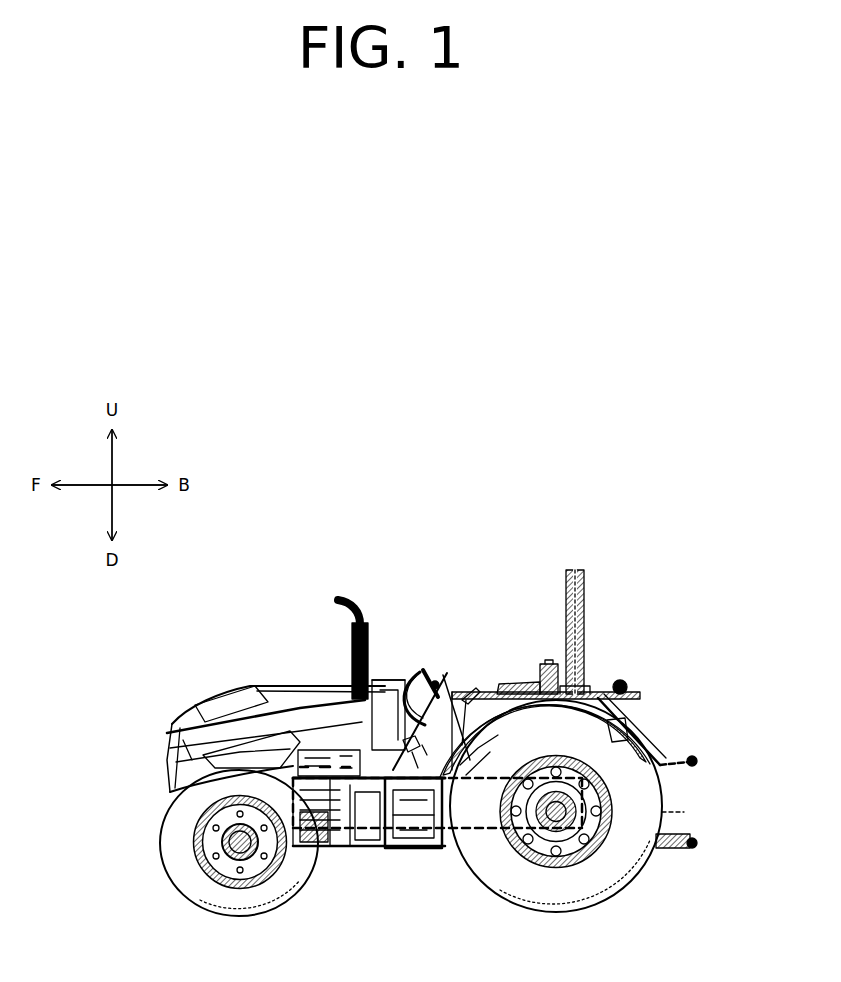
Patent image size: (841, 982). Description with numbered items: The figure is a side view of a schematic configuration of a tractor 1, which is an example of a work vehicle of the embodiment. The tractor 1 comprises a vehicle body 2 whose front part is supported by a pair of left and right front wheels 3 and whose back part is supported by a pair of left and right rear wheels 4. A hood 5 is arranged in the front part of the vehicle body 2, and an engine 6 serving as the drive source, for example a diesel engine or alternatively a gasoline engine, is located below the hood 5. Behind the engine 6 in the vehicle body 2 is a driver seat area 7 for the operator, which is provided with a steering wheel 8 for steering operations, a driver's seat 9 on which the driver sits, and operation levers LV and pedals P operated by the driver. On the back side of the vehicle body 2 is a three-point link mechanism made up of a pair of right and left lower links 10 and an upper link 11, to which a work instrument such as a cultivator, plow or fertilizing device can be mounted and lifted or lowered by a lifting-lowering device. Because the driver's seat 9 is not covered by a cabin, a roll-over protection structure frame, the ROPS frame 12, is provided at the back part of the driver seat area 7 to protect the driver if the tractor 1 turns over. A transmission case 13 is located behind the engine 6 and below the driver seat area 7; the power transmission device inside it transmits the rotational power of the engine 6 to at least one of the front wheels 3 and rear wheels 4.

The tractor 1 is at (646, 528).
The vehicle body 2 is at (335, 847).
The front wheels 3 is at (238, 902).
The rear wheels 4 is at (560, 905).
The hood 5 is at (282, 700).
The engine 6 is at (313, 742).
The driver seat area 7 is at (461, 600).
The steering wheel 8 is at (437, 688).
The driver's seat 9 is at (537, 690).
The lower links 10 is at (672, 855).
The upper link 11 is at (668, 752).
The ROPS frame 12 is at (586, 622).
The transmission case 13 is at (445, 850).
The pedals P is at (427, 742).
The operation levers LV is at (470, 698).